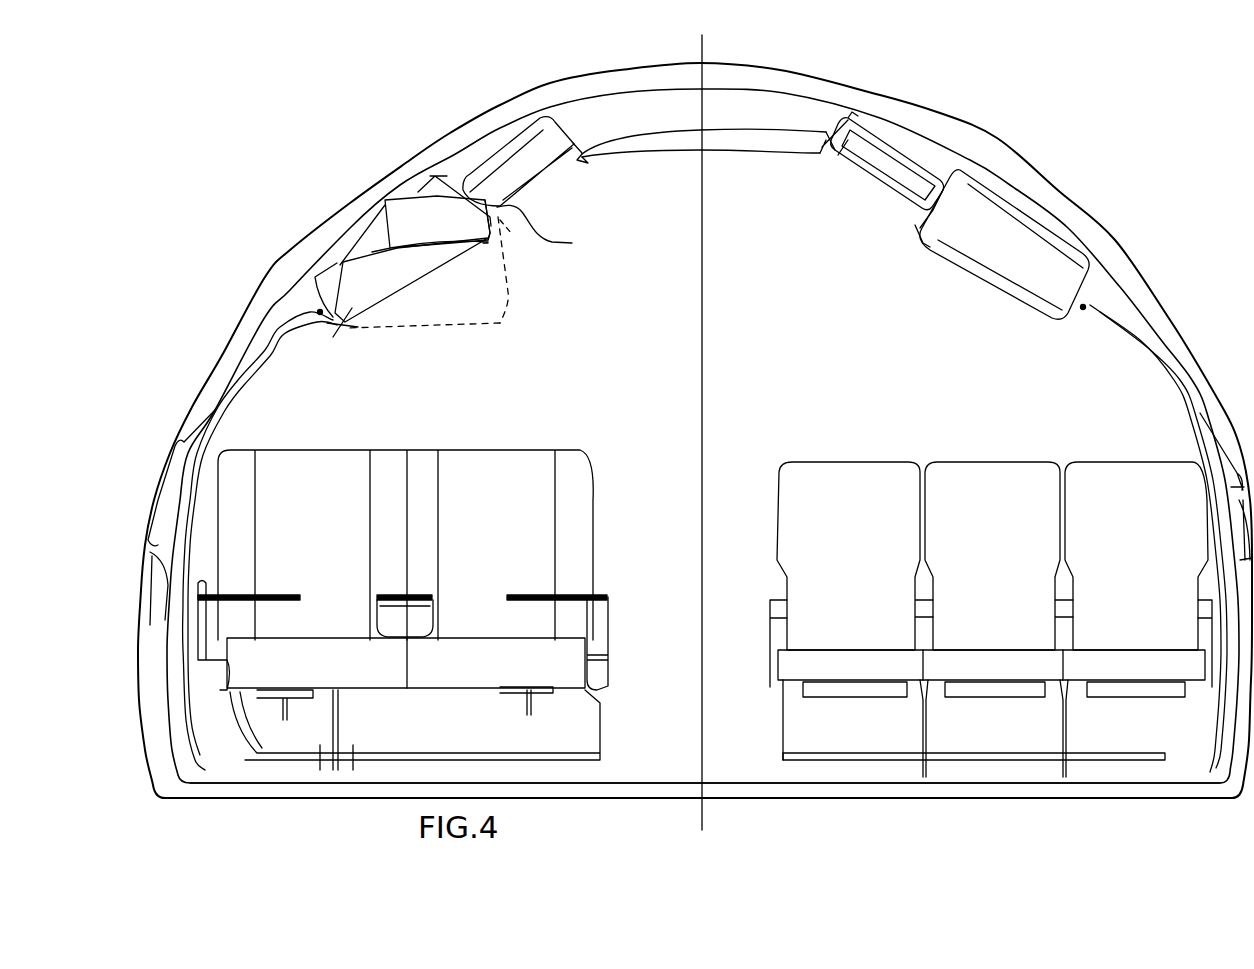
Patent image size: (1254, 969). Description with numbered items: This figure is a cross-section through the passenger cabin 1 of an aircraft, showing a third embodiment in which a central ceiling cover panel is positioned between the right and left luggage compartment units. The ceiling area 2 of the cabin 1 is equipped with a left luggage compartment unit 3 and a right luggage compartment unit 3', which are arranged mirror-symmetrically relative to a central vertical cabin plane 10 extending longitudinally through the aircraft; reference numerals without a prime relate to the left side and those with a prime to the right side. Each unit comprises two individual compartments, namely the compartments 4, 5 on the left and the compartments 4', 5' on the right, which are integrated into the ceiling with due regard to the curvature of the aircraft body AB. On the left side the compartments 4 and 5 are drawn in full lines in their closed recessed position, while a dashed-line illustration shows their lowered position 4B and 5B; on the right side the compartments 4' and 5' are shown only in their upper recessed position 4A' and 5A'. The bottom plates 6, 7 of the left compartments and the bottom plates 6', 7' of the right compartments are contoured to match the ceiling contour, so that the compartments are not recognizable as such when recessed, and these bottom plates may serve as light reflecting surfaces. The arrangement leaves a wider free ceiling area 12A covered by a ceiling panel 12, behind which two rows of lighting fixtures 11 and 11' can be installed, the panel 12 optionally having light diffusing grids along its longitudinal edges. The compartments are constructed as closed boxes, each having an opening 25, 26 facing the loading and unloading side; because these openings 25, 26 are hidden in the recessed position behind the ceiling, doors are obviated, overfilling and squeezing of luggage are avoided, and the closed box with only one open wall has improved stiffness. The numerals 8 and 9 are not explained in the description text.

The passenger cabin 1 is at (298, 180).
The ceiling area 2 is at (792, 212).
The luggage compartment unit 3 is at (436, 164).
The luggage compartment unit 3' is at (974, 174).
The compartment 4 is at (402, 281).
The compartment 4' is at (1016, 245).
The upper recessed position 4A' is at (996, 284).
The lowered position 4B is at (420, 330).
The compartment 5 is at (520, 161).
The compartment 5' is at (887, 140).
The upper recessed position 5A' is at (888, 199).
The lowered position 5B is at (572, 243).
The bottom plate 6 is at (411, 281).
The bottom plate 6' is at (905, 276).
The bottom plate 7 is at (524, 219).
The bottom plate 7' is at (833, 179).
The passenger seat 8 is at (226, 548).
The cabin floor 9 is at (645, 763).
The central vertical cabin plane 10 is at (707, 772).
The lighting fixture 11 is at (596, 96).
The lighting fixture 11' is at (848, 93).
The ceiling panel 12 is at (767, 153).
The free ceiling area 12A is at (733, 148).
The opening 25 is at (510, 303).
The opening 26 is at (515, 241).
The aircraft body AB is at (1140, 277).